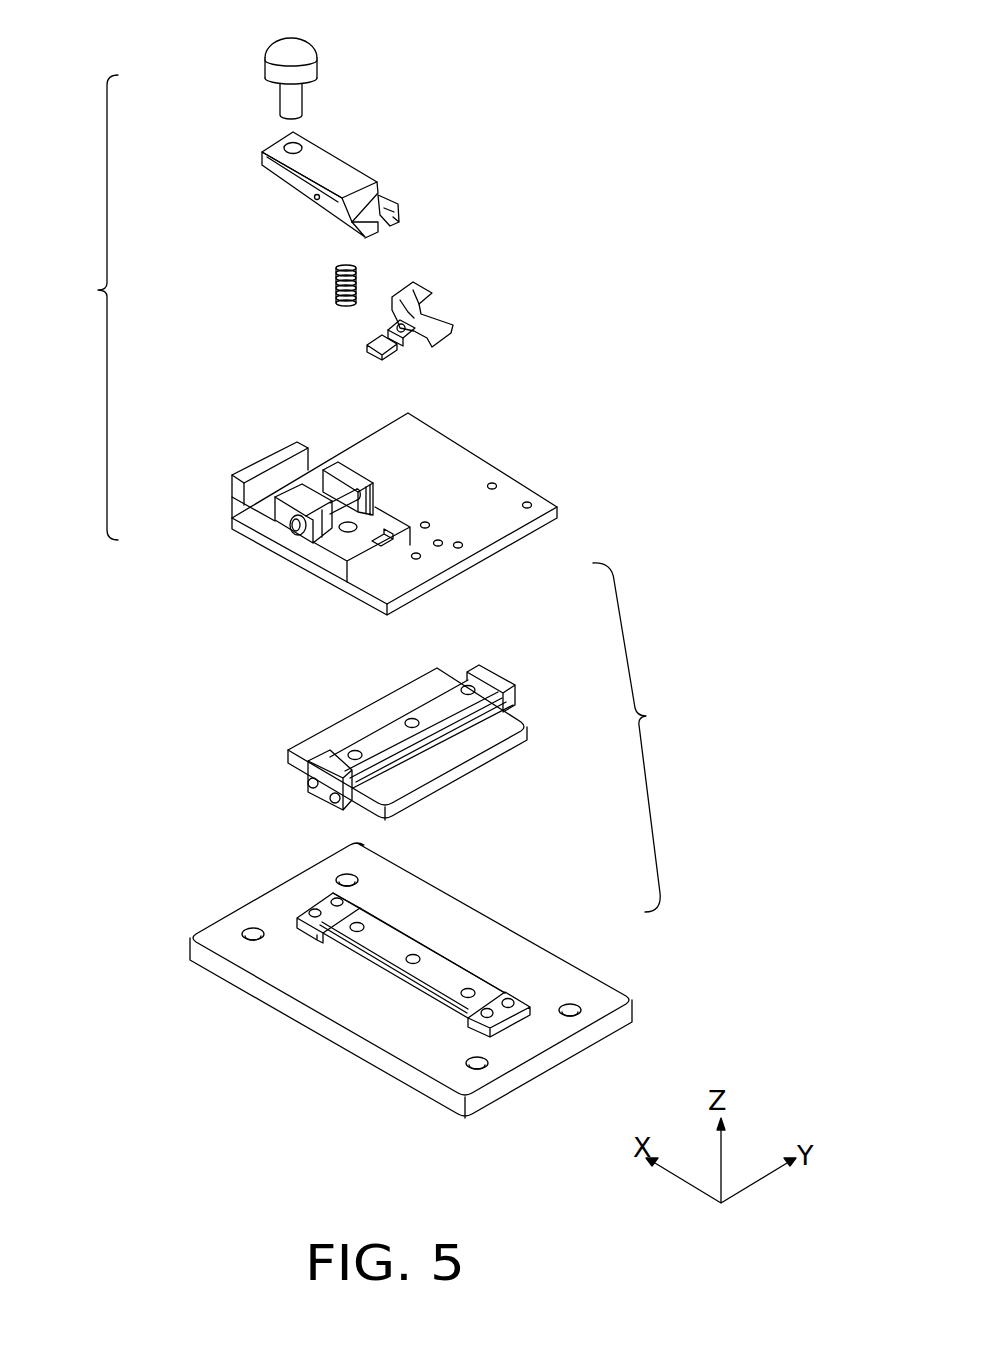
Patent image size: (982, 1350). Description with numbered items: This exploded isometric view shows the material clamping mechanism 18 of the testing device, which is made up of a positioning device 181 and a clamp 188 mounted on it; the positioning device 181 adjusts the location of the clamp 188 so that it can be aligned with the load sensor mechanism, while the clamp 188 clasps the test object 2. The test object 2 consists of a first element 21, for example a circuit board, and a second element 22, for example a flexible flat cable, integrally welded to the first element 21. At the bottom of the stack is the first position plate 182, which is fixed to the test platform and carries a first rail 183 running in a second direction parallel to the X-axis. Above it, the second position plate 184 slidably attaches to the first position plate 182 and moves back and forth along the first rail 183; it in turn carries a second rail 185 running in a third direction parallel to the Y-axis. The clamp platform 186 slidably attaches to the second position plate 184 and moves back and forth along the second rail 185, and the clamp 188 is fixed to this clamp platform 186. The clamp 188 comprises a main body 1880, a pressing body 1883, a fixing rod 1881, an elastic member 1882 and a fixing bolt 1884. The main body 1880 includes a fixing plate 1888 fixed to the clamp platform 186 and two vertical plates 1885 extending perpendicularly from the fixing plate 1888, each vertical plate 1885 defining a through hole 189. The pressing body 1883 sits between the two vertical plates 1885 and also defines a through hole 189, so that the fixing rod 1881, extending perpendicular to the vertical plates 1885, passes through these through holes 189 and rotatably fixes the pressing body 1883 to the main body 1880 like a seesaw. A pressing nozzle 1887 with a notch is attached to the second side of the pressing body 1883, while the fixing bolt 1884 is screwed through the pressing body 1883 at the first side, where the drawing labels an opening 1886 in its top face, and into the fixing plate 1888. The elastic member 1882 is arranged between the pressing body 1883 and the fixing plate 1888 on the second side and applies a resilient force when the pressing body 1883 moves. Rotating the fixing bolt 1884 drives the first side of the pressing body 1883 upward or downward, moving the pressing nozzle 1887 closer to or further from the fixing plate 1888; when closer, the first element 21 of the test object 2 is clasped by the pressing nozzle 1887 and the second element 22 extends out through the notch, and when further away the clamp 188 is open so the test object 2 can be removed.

The material clamping mechanism 18 is at (480, 38).
The clamp 188 is at (76, 307).
The positioning device 181 is at (647, 737).
The fixing bolt 1884 is at (273, 70).
The pressing body 1883 is at (270, 163).
The through hole 1886 is at (293, 148).
The pressing nozzle 1887 is at (393, 217).
The through hole 189 is at (316, 199).
The elastic member 1882 is at (336, 289).
The test object 2 is at (432, 283).
The second element 22 is at (410, 308).
The first element 21 is at (395, 338).
The clamp platform 186 is at (480, 535).
The main body 1880 is at (273, 460).
The fixing rod 1881 is at (298, 525).
The fixing plate 1888 is at (267, 506).
The vertical plate 1885 is at (360, 482).
The second position plate 184 is at (493, 755).
The second rail 185 is at (483, 688).
The first position plate 182 is at (518, 972).
The first rail 183 is at (382, 948).